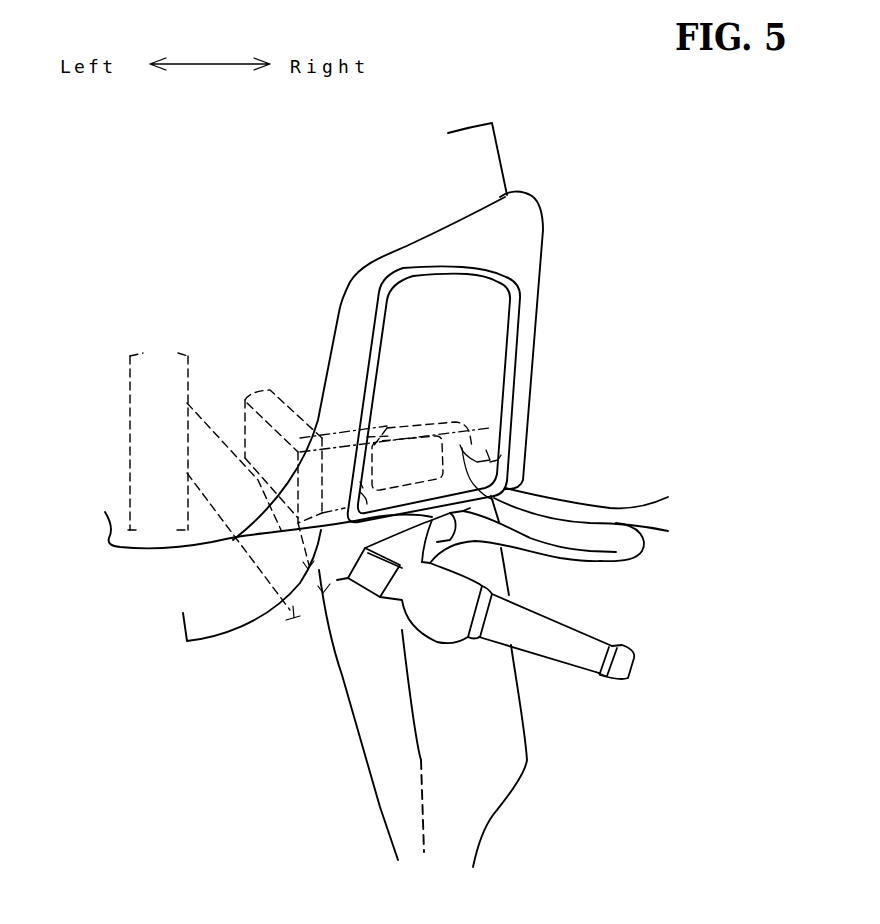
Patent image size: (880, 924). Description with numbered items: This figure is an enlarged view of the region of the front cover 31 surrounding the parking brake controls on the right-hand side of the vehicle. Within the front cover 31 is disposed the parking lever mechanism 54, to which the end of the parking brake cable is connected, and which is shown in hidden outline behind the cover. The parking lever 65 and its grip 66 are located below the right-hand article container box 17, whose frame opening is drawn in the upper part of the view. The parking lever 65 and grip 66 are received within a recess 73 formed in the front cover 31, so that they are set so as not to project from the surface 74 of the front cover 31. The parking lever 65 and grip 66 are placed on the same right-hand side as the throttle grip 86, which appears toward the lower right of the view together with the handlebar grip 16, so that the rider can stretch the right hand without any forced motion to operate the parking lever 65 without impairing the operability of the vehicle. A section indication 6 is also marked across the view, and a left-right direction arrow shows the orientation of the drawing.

The section line 6- 6 is at (562, 454).
The handlebar grip 16 is at (637, 616).
The right-hand article container box 17 is at (526, 270).
The front cover 31 is at (580, 302).
The parking lever mechanism 54 is at (272, 386).
The parking lever 65 is at (390, 422).
The grip 66 is at (400, 436).
The recess 73 is at (670, 532).
The surface 74 is at (670, 497).
The throttle grip 86 is at (580, 668).